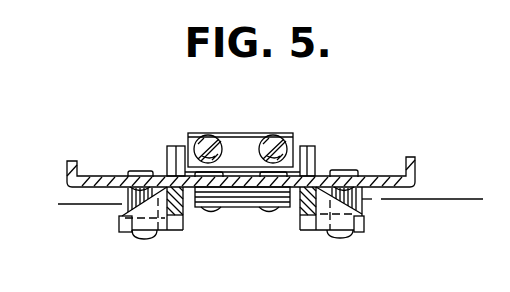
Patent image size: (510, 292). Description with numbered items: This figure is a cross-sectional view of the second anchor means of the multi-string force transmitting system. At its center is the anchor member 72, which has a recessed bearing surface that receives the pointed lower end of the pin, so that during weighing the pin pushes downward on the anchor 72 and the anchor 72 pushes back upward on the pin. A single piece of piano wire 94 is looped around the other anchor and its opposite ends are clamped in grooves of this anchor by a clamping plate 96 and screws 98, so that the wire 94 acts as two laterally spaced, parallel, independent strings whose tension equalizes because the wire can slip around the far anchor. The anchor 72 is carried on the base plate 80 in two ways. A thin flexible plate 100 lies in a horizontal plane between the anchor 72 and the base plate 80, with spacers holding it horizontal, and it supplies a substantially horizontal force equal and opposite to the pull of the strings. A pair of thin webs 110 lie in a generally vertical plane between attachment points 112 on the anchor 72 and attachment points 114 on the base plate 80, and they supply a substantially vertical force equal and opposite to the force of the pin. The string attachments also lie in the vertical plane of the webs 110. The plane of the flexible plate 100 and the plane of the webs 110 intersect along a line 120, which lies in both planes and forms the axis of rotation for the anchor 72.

The anchor member 72 is at (299, 211).
The base plate 80 is at (414, 163).
The piano wire 94 is at (212, 134).
The clamping plate 96 is at (239, 143).
The screws 98 is at (275, 135).
The thin flexible plate 100 is at (238, 208).
The thin webs 110 is at (124, 194).
The attachment point 112 is at (132, 236).
The attachment point 114 is at (128, 171).
The line 120 is at (428, 200).